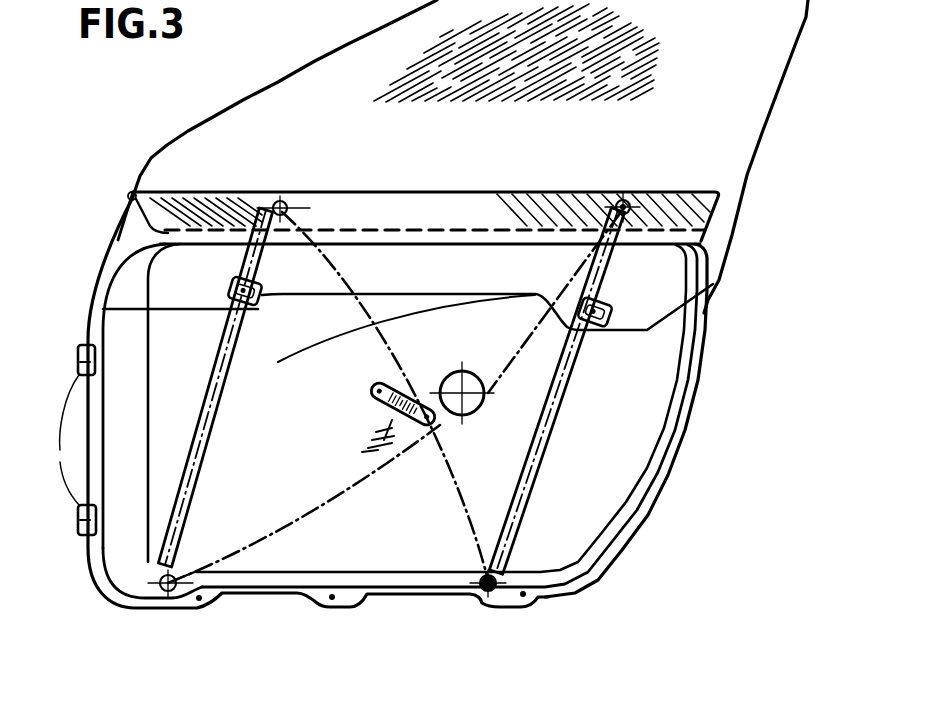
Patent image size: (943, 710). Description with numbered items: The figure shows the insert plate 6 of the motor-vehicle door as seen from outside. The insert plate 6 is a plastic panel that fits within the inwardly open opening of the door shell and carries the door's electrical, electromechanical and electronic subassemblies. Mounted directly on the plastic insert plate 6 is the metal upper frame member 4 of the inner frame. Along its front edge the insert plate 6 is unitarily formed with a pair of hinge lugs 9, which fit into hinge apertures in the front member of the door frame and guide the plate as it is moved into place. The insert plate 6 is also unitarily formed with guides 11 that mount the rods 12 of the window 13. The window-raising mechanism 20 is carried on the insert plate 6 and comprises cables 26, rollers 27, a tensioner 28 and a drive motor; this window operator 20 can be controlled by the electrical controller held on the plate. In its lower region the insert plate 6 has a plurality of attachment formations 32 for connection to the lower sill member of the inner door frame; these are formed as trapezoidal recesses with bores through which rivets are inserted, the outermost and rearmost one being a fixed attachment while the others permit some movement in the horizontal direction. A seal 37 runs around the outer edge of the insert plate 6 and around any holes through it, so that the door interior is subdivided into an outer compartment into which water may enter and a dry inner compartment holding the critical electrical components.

The upper frame member 4 is at (458, 198).
The insert plate 6 is at (83, 615).
The hinge lugs 9 is at (61, 440).
The guides 11 is at (563, 443).
The mounting rods 12 is at (258, 304).
The window 13 is at (720, 100).
The window-raising mechanism 20 is at (490, 395).
The cables 26 is at (345, 486).
The pivot fastening point 27 is at (283, 201).
The tensioner 28 is at (356, 413).
The attachment formations 32 is at (207, 598).
The seal 37 is at (664, 430).